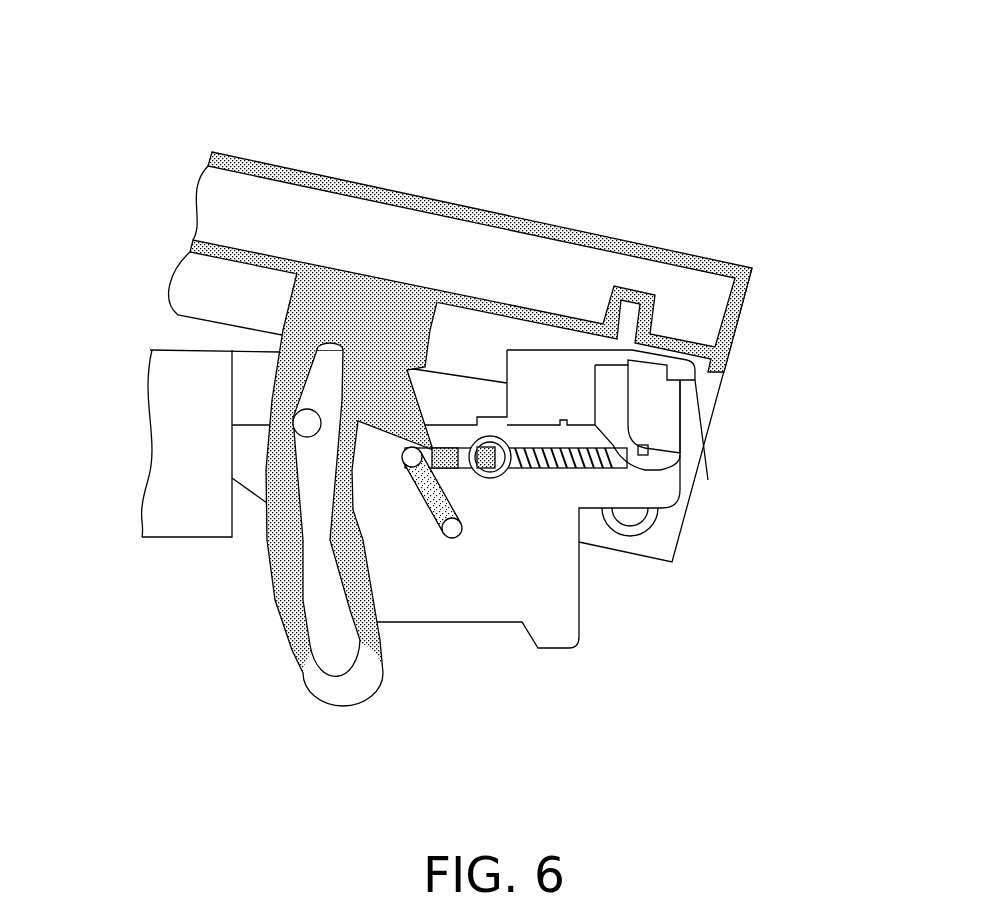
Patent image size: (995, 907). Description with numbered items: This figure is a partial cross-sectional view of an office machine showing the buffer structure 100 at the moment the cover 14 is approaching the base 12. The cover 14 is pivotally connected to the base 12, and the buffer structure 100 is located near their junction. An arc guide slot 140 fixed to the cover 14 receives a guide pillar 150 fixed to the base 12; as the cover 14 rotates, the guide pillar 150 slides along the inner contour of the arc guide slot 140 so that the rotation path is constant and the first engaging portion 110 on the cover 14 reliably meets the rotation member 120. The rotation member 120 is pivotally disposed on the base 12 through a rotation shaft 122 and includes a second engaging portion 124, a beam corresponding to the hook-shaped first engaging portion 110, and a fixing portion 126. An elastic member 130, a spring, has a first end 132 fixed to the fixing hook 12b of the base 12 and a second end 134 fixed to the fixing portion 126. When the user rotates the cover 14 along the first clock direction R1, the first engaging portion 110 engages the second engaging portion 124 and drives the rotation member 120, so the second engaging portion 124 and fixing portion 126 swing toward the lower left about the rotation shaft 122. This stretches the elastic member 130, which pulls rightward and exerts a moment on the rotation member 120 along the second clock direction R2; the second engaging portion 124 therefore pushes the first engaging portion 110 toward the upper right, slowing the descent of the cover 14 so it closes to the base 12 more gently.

The buffer structure 100 is at (408, 395).
The base 12 is at (552, 622).
The fixing hook 12b is at (643, 462).
The cover 14 is at (573, 283).
The first engaging portion 110 is at (437, 445).
The rotation member 120 is at (507, 604).
The rotation shaft 122 is at (452, 532).
The second engaging portion 124 is at (407, 465).
The fixing portion 126 is at (493, 477).
The elastic member 130 is at (605, 540).
The first end 132 is at (660, 427).
The second end 134 is at (460, 463).
The arc guide slot 140 is at (300, 385).
The guide pillar 150 is at (307, 432).
The first clock direction R1 is at (573, 87).
The second clock direction R2 is at (713, 115).